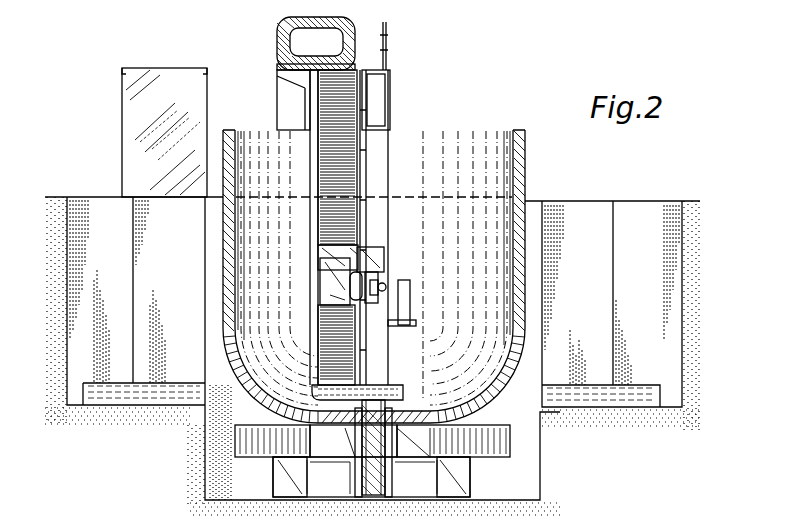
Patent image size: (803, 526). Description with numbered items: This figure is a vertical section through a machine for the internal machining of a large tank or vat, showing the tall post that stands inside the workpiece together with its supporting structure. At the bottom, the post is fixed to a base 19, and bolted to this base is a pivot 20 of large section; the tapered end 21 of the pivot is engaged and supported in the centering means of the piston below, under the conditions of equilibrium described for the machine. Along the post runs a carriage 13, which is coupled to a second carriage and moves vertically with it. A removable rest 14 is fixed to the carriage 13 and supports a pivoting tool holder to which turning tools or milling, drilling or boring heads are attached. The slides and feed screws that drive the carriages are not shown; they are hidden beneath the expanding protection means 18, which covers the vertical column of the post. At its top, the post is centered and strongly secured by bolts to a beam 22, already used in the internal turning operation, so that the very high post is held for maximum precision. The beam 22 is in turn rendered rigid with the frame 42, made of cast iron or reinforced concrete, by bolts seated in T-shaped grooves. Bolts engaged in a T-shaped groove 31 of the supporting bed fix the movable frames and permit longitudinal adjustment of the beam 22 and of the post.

The beam 22 is at (290, 29).
The frame 42 is at (130, 113).
The T-shaped groove 31 is at (284, 175).
The expanding protection means 18 is at (320, 216).
The carriage 13 is at (320, 252).
The removable rest 14 is at (330, 285).
The base 19 is at (373, 388).
The pivot 20 is at (383, 415).
The tapered end 21 is at (348, 436).